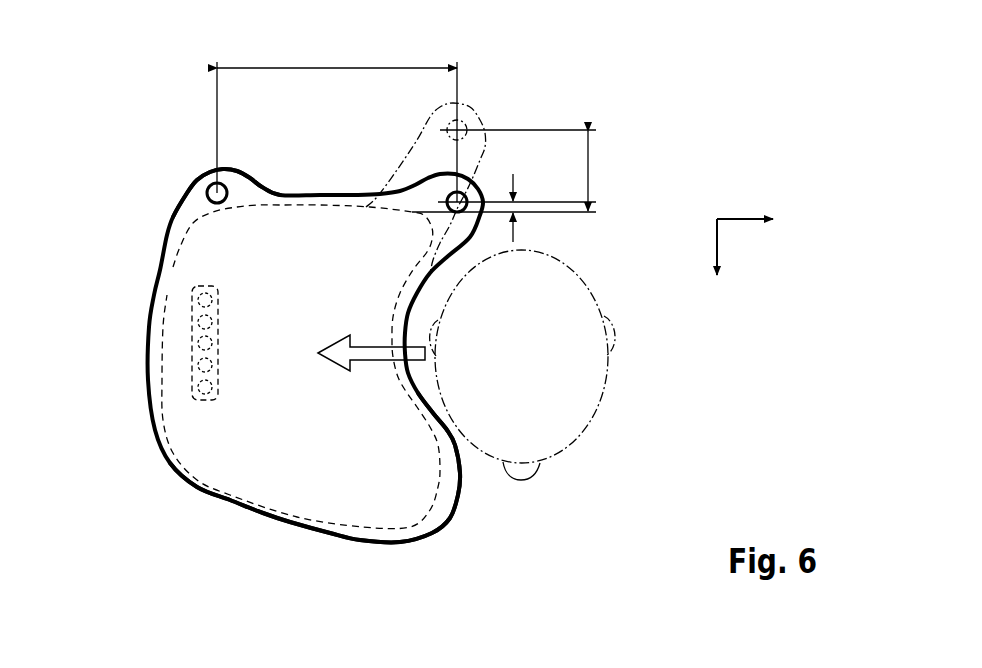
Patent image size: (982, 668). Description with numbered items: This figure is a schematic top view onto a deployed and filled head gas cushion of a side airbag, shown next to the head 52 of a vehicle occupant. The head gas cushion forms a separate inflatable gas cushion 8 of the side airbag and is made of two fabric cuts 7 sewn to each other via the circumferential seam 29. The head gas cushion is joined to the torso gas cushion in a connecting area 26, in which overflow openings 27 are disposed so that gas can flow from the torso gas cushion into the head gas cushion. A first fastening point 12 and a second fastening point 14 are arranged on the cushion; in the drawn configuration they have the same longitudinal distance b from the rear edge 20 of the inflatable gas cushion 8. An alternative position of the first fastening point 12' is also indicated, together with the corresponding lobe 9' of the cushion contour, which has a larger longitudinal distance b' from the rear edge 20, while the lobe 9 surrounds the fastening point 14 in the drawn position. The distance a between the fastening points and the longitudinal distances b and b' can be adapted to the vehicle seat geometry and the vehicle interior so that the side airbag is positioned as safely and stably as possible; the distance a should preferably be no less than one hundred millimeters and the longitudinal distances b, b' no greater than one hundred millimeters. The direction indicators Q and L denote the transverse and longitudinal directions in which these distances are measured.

The fabric cut 7 is at (174, 229).
The inflatable gas cushion 8 is at (265, 487).
The upper fastening lobe 9 is at (226, 165).
The shifted upper lobe position 9' is at (426, 189).
The first fastening point 12 is at (408, 137).
The first fastening point 12' is at (481, 101).
The second fastening point 14 is at (207, 189).
The rear edge 20 is at (308, 204).
The connecting area 26 is at (193, 310).
The overflow openings 27 is at (196, 362).
The circumferential seam 29 is at (450, 503).
The head 52 is at (595, 385).
The distance a is at (339, 68).
The longitudinal distance b is at (540, 208).
The longitudinal distance b' is at (528, 171).
The transverse direction Q is at (738, 219).
The longitudinal direction L is at (717, 245).